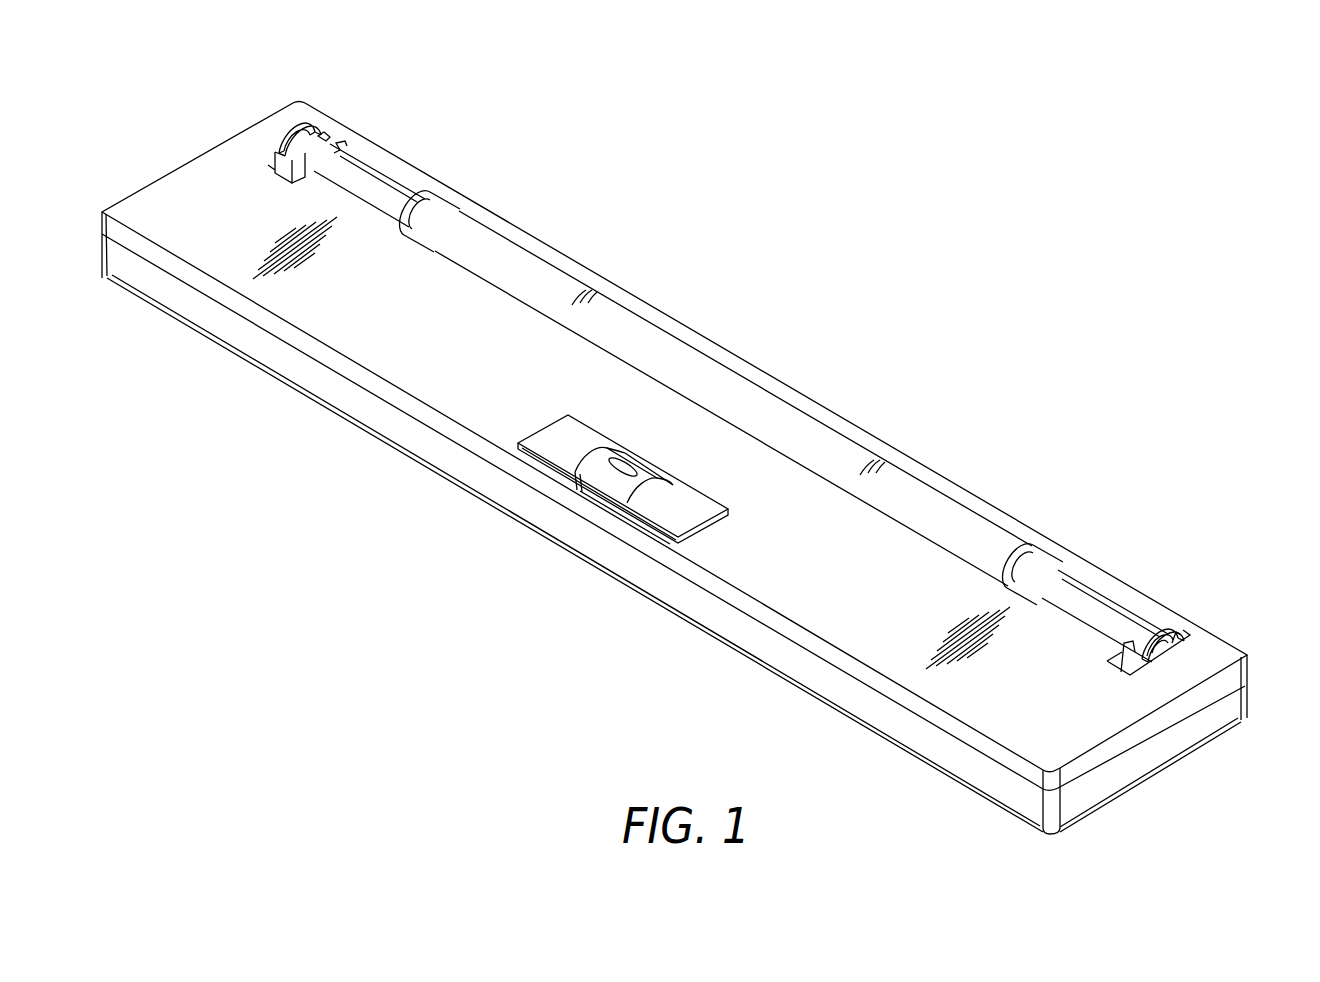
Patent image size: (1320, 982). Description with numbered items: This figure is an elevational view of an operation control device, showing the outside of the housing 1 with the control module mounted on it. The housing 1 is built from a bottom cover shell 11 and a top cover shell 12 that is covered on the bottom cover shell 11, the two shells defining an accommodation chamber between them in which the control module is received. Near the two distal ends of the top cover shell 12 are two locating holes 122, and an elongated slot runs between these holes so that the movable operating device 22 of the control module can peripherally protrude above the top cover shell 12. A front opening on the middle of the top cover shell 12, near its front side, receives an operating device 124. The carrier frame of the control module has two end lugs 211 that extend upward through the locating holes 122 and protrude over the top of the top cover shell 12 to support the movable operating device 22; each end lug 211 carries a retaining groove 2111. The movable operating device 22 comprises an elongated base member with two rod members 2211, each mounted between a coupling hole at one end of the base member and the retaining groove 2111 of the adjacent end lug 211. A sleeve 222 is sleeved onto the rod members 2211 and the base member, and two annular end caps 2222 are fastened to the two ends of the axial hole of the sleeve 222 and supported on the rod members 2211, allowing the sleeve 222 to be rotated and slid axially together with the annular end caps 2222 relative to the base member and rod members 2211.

The housing 1 is at (464, 475).
The bottom cover shell 11 is at (598, 542).
The top cover shell 12 is at (543, 350).
The locating holes 122 is at (343, 137).
The operating device 124 is at (695, 505).
The movable operating device 22 is at (908, 470).
The end lugs 211 is at (280, 130).
The retaining groove 2111 is at (323, 133).
The rod members 2211 is at (378, 193).
The sleeve 222 is at (643, 340).
The annular end caps 2222 is at (427, 203).